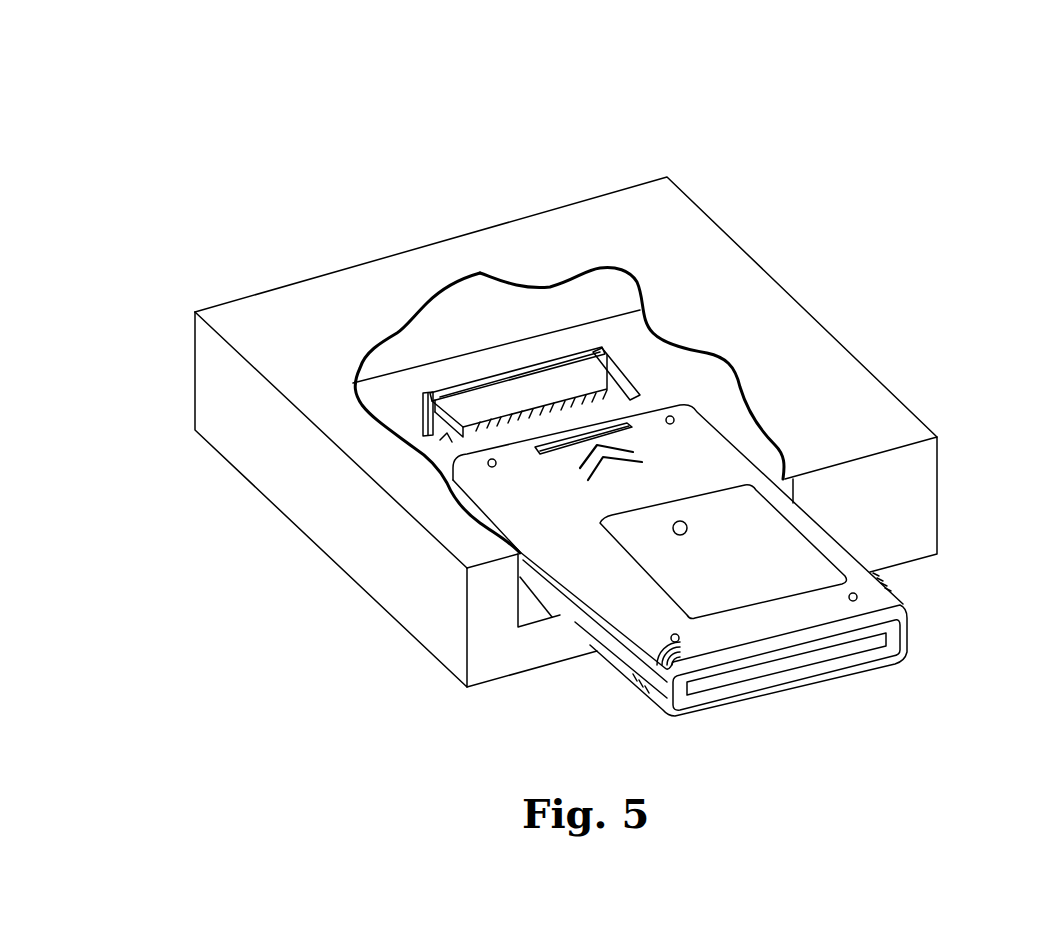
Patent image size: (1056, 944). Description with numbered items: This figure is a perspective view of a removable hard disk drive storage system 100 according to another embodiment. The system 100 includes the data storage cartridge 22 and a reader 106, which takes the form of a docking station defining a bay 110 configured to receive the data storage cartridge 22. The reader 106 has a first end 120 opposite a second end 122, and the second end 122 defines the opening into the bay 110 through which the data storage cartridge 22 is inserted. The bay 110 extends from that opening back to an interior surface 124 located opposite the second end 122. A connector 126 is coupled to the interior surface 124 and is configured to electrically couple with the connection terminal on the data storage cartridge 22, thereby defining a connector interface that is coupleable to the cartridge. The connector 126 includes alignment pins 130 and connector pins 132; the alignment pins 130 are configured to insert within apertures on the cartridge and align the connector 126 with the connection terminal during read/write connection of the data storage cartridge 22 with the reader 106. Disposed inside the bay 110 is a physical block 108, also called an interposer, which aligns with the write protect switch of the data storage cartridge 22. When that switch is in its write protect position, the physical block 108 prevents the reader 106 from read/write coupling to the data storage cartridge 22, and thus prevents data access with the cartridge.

The removable hard disk drive storage system 100 is at (883, 133).
The reader 106 is at (838, 383).
The physical block 108 is at (615, 357).
The bay 110 is at (535, 604).
The first end 120 is at (213, 364).
The second end 122 is at (918, 510).
The interior surface 124 is at (552, 362).
The connector 126 is at (490, 372).
The alignment pins 130 is at (640, 407).
The connector pins 132 is at (477, 445).
The data storage cartridge 22 is at (864, 568).